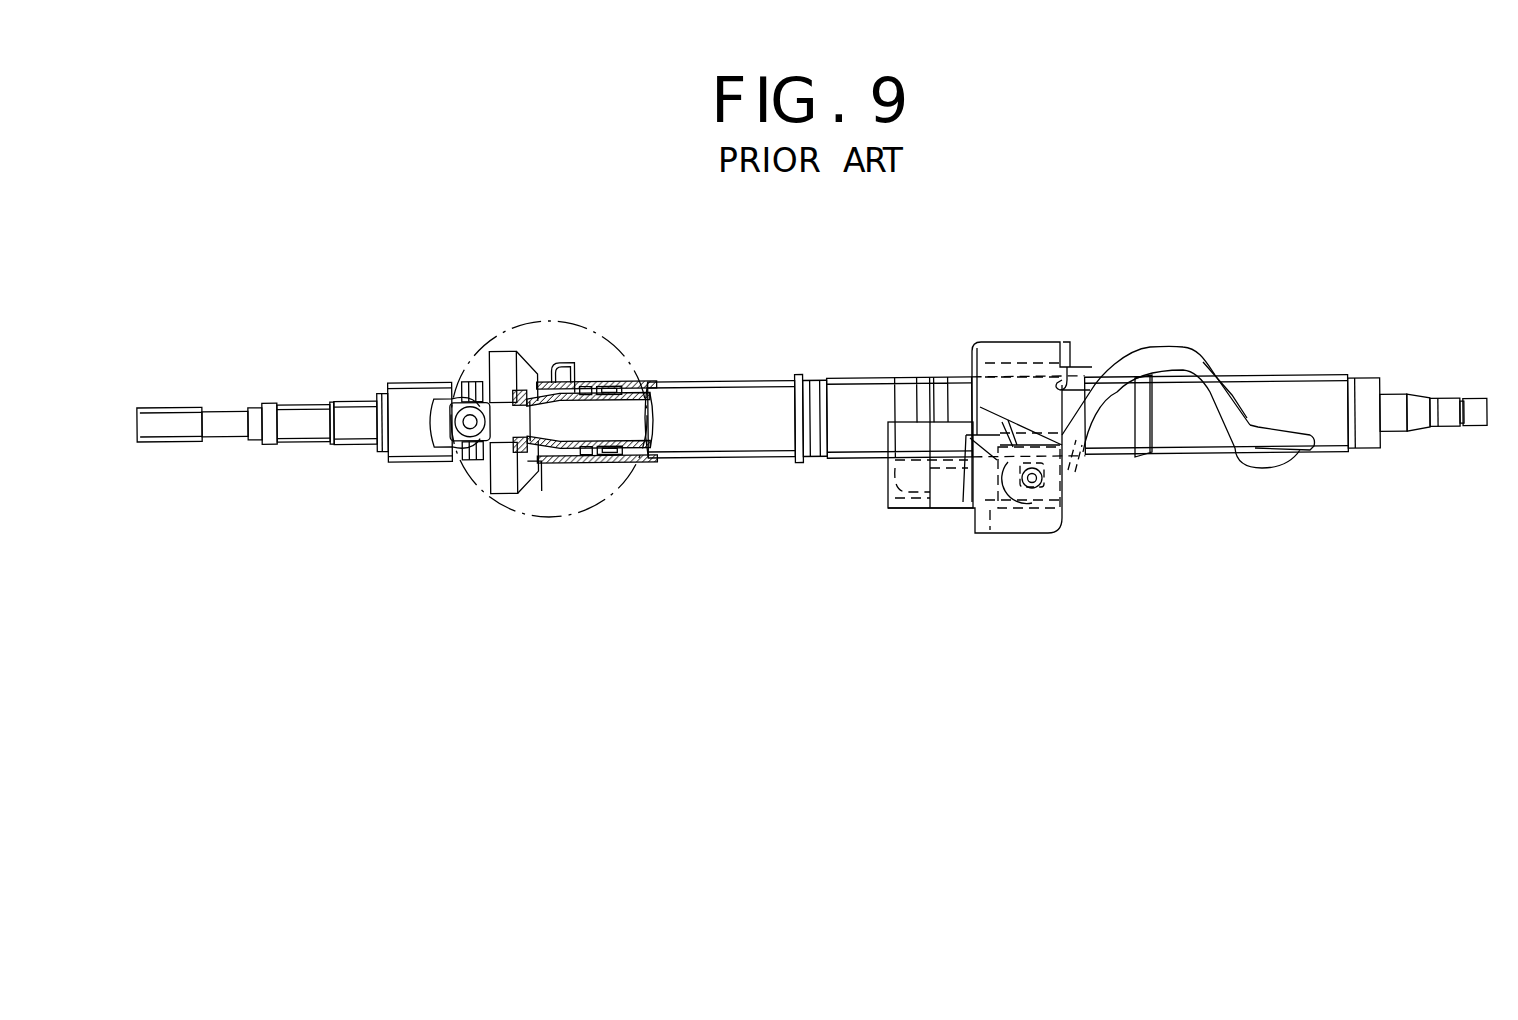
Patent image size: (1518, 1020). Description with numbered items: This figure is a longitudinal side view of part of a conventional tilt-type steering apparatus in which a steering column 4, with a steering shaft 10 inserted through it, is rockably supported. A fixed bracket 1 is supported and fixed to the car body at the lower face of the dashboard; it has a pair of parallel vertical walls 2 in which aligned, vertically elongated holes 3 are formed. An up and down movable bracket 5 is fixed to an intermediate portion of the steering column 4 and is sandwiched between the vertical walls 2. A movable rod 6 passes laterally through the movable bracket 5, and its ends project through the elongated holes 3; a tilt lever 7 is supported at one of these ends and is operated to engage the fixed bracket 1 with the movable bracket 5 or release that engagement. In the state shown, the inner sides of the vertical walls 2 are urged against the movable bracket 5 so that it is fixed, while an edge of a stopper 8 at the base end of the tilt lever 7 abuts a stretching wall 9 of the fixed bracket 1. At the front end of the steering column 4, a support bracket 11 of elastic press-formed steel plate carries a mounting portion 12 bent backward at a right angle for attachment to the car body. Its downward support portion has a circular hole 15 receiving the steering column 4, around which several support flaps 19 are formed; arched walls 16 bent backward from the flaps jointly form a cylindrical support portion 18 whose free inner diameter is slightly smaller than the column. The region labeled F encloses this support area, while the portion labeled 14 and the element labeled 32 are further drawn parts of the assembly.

The fixed bracket 1 is at (1028, 356).
The vertical walls 2 is at (1012, 533).
The elongated holes 3 is at (1032, 500).
The steering column 4 is at (866, 400).
The movable bracket 5 is at (990, 530).
The movable rod 6 is at (1045, 482).
The tilt lever 7 is at (1160, 365).
The stopper 8 is at (1005, 410).
The stretching wall 9 is at (960, 420).
The steering shaft 10 is at (1478, 402).
The support bracket 11 is at (571, 358).
The mounting portion 12 is at (622, 376).
The fixing member 14 is at (556, 468).
The circular hole 15 is at (568, 468).
The arched walls 16 is at (590, 380).
The cylindrical support portion 18 is at (563, 465).
The support flaps 19 is at (545, 382).
The support block 32 is at (945, 495).
The joint region F is at (516, 318).